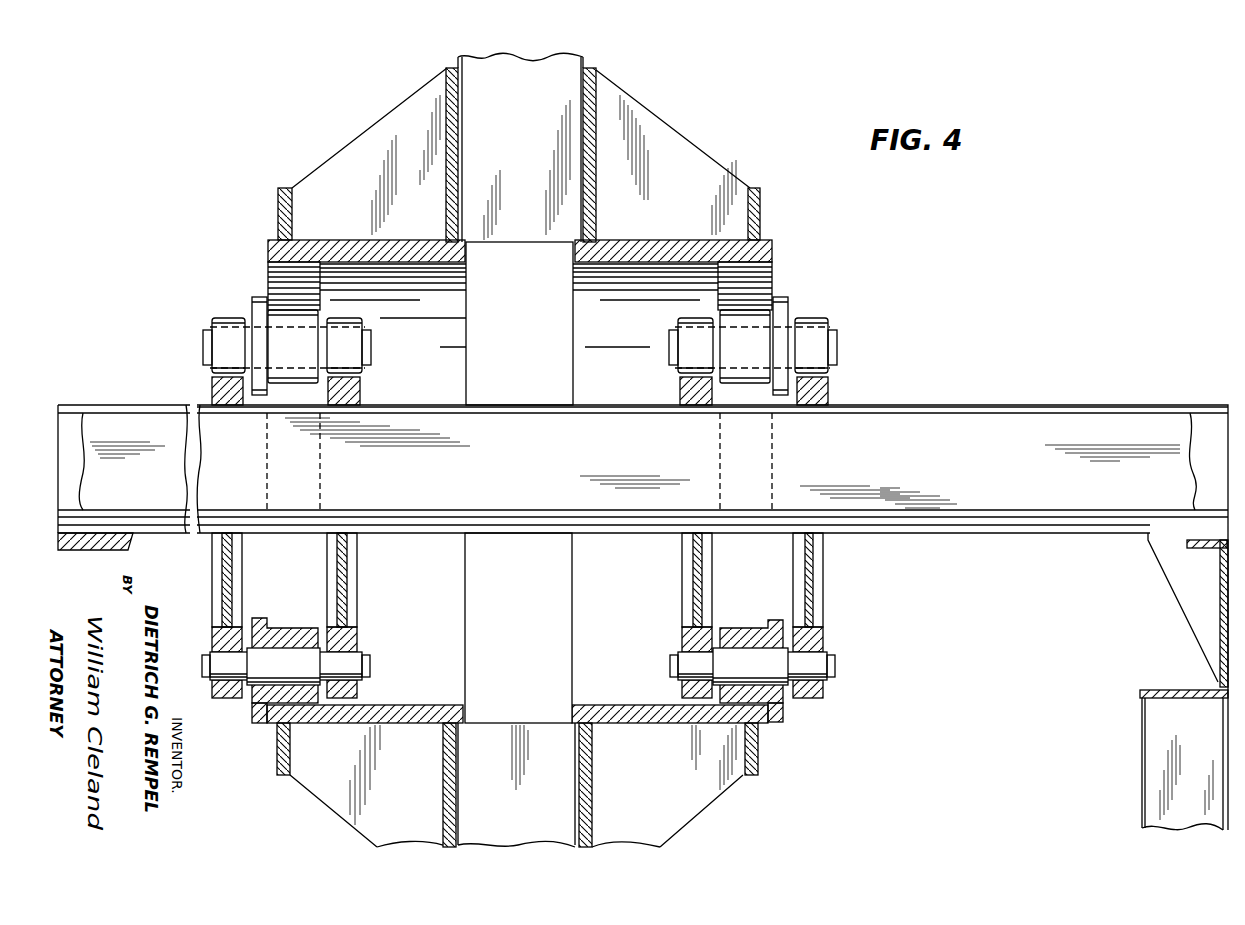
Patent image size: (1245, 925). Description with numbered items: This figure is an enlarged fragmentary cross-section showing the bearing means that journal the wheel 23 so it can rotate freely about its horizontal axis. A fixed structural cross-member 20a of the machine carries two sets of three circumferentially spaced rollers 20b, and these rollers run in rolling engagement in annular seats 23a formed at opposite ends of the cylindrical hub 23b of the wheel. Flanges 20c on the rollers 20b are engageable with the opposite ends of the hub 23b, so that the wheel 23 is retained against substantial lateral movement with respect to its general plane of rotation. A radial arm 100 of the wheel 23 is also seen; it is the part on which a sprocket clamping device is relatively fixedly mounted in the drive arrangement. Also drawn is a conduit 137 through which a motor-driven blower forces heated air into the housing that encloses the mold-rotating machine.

The wheel 23 is at (604, 65).
The annular seats 23a is at (770, 266).
The cylindrical hub 23b is at (573, 272).
The structural cross-member 20a is at (413, 405).
The rollers 20b is at (765, 310).
The flanges 20c is at (255, 300).
The radial arm 100 is at (528, 230).
The conduits 137 is at (958, 417).